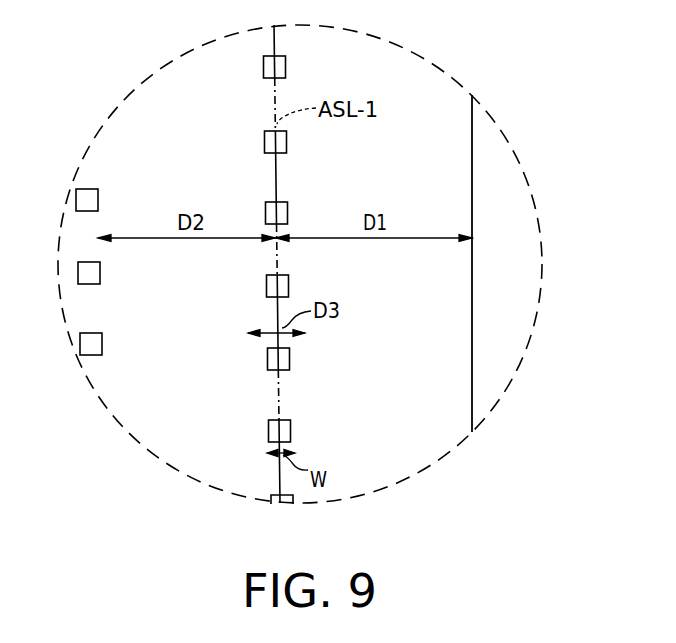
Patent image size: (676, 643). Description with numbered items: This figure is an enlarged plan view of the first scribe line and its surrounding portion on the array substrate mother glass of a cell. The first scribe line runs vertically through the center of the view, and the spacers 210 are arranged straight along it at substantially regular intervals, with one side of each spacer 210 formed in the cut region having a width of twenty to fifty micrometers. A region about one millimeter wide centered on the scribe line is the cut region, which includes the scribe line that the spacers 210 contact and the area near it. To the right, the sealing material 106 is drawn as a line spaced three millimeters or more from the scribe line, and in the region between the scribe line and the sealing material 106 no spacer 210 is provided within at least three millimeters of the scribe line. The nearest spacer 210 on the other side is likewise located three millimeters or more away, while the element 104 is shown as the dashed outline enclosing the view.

The wafer 104 is at (96, 138).
The sealing material 106 is at (527, 313).
The spacer 210 is at (268, 362).